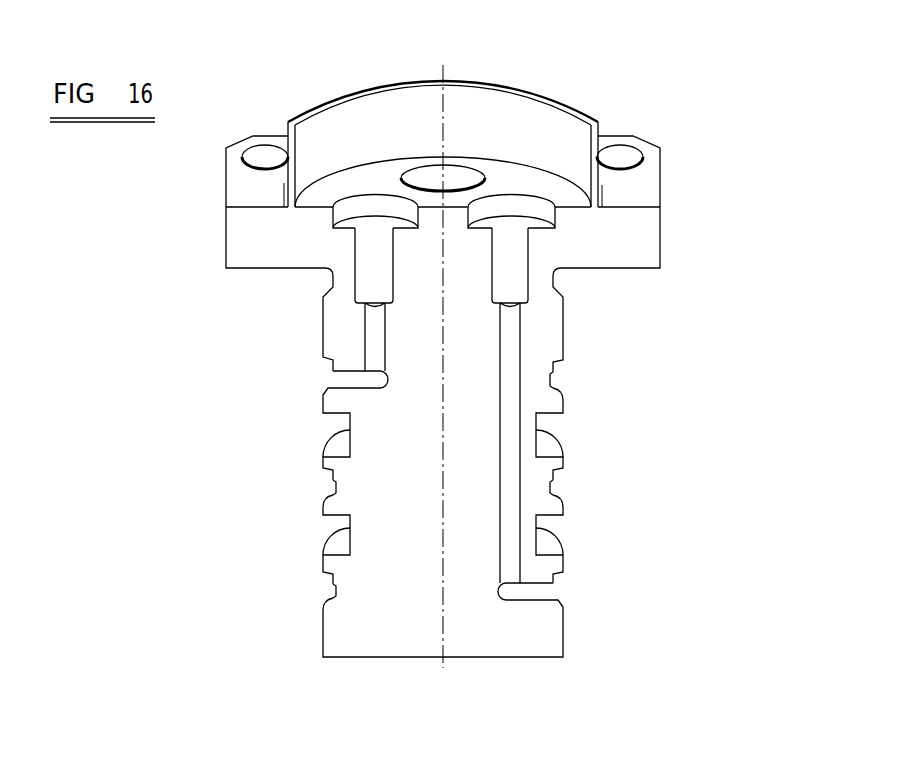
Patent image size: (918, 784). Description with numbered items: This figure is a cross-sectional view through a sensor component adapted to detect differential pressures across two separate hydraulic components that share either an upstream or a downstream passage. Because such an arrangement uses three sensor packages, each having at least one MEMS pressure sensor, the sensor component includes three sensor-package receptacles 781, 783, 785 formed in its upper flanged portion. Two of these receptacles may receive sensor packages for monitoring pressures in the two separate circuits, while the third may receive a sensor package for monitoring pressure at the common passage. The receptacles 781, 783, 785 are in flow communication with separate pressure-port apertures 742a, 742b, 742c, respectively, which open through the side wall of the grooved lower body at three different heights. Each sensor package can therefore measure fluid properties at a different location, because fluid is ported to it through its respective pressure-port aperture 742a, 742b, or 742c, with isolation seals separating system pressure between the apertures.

The sensor-package receptacle 781 is at (515, 213).
The sensor-package receptacle 783 is at (450, 178).
The sensor-package receptacle 785 is at (370, 217).
The pressure-port aperture 742a is at (547, 590).
The pressure-port aperture 742b is at (337, 486).
The pressure-port aperture 742c is at (337, 380).